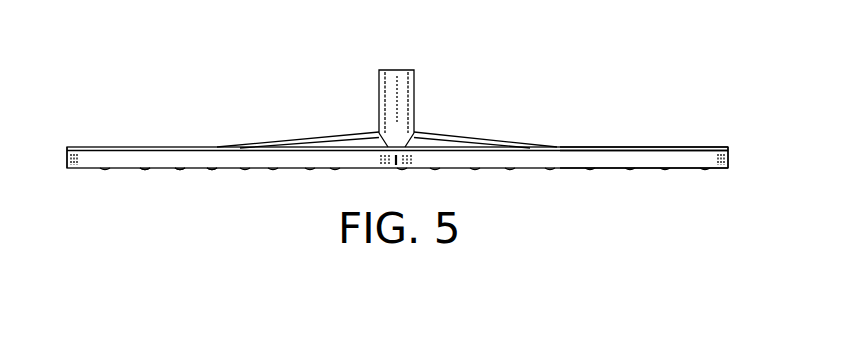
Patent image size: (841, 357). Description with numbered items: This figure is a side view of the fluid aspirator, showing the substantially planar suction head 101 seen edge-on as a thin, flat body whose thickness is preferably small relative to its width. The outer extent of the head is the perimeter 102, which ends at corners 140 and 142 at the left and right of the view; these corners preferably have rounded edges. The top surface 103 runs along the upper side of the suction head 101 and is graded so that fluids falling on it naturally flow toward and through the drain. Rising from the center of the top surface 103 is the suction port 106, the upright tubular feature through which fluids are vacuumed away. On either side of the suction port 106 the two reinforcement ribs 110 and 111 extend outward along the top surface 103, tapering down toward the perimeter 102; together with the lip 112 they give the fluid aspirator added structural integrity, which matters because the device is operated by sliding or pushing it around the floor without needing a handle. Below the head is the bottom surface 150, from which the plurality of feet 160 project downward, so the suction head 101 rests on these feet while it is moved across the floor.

The suction head 101 is at (734, 151).
The perimeter 102 is at (92, 169).
The top surface 103 is at (634, 146).
The suction port 106 is at (414, 84).
The reinforcement rib 110 is at (336, 141).
The reinforcement rib 111 is at (478, 143).
The lip 112 is at (253, 165).
The corner 140 is at (70, 146).
The corner 142 is at (725, 146).
The bottom surface 150 is at (171, 169).
The feet 160 is at (655, 170).